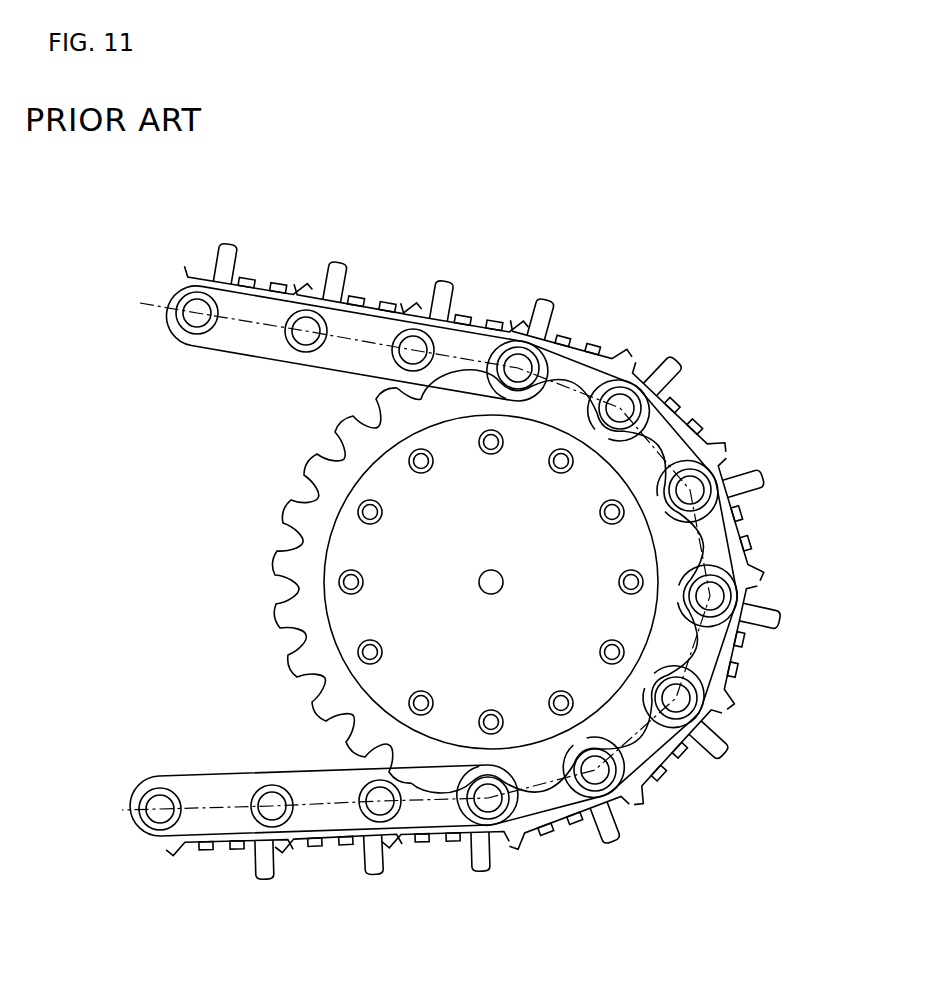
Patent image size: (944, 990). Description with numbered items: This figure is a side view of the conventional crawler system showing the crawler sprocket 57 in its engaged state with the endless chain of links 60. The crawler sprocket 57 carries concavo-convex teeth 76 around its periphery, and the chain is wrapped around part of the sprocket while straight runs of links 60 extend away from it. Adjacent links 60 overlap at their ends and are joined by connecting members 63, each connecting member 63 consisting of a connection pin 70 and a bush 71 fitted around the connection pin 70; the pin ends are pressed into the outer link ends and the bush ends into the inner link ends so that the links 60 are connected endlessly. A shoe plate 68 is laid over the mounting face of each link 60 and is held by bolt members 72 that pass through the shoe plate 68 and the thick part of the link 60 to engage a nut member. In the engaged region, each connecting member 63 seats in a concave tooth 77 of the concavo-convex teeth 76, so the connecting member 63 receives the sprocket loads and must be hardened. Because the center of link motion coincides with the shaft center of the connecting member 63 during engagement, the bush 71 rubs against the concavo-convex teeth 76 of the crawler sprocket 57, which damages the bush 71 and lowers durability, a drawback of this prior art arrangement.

The crawler sprocket 57 is at (438, 581).
The concavo-convex teeth 76 is at (278, 601).
The link 60 is at (363, 326).
The connecting member 63 is at (302, 344).
The connection pin 70 is at (620, 388).
The bush 71 is at (672, 399).
The shoe plate 68 is at (221, 238).
The bolt member 72 is at (277, 272).
The concave tooth 77 is at (725, 549).